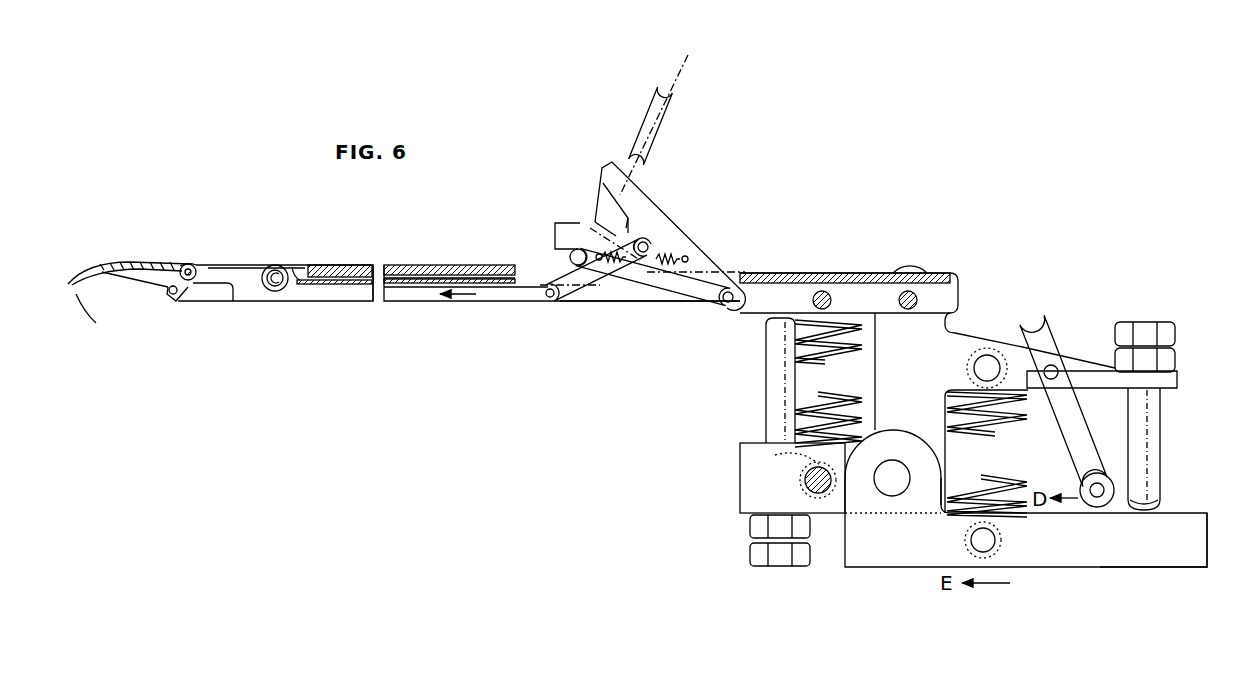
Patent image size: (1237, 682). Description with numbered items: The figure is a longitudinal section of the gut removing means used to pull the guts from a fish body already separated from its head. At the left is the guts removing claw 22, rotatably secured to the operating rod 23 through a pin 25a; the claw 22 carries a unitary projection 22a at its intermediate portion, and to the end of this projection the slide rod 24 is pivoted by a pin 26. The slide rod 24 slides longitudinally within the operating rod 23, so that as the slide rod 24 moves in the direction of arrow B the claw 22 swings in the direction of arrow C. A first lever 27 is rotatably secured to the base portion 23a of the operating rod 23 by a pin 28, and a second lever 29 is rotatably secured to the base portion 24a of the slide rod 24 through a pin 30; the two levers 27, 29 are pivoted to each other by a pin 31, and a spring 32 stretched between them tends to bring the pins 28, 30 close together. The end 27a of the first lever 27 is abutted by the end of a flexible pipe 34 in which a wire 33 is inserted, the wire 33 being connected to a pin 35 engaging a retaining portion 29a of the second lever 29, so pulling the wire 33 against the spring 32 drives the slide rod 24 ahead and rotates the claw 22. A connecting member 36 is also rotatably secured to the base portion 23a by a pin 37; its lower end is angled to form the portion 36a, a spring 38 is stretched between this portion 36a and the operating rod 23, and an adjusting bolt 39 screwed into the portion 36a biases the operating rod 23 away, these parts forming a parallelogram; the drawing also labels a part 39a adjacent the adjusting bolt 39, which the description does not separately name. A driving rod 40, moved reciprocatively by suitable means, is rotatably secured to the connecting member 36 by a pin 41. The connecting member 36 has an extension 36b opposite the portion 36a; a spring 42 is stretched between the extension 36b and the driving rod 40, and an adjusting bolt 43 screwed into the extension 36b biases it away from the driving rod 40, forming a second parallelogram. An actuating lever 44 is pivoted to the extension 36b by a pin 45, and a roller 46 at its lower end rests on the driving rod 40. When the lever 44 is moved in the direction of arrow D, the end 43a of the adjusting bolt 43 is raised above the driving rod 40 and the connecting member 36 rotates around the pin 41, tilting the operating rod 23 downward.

The guts removing claw 22 is at (110, 262).
The unitary projection 22a is at (176, 263).
The pin 26 is at (192, 266).
The pin 25a is at (175, 297).
The operating rod 23 is at (410, 265).
The slide rod 24 is at (392, 303).
The base portion of the slide rod 24a is at (578, 303).
The pin 30 is at (548, 301).
The pin 31 is at (652, 244).
The retaining portion 29a is at (574, 250).
The pin 35 is at (570, 256).
The second lever 29 is at (622, 265).
The spring 32 is at (666, 266).
The first lever 27 is at (652, 201).
The end of the first lever 27a is at (634, 188).
The wire 33 is at (600, 208).
The pin 28 is at (727, 308).
The flexible pipe 34 is at (656, 115).
The base portion of the operating rod 23a is at (800, 286).
The pin 37 is at (911, 292).
The spring 38 is at (835, 340).
The adjusting bolt 39 is at (773, 424).
The guide rod housing 39a is at (773, 334).
The connecting member 36 is at (960, 302).
The angled lower end portion 36a is at (745, 486).
The extension 36b is at (1098, 342).
The driving rod 40 is at (1062, 569).
The pin 41 is at (880, 492).
The spring 42 is at (940, 508).
The adjusting bolt 43 is at (1162, 438).
The end of the adjusting bolt 43a is at (1162, 480).
The actuating lever 44 is at (1117, 418).
The pin 45 is at (1058, 366).
The roller 46 is at (1108, 540).